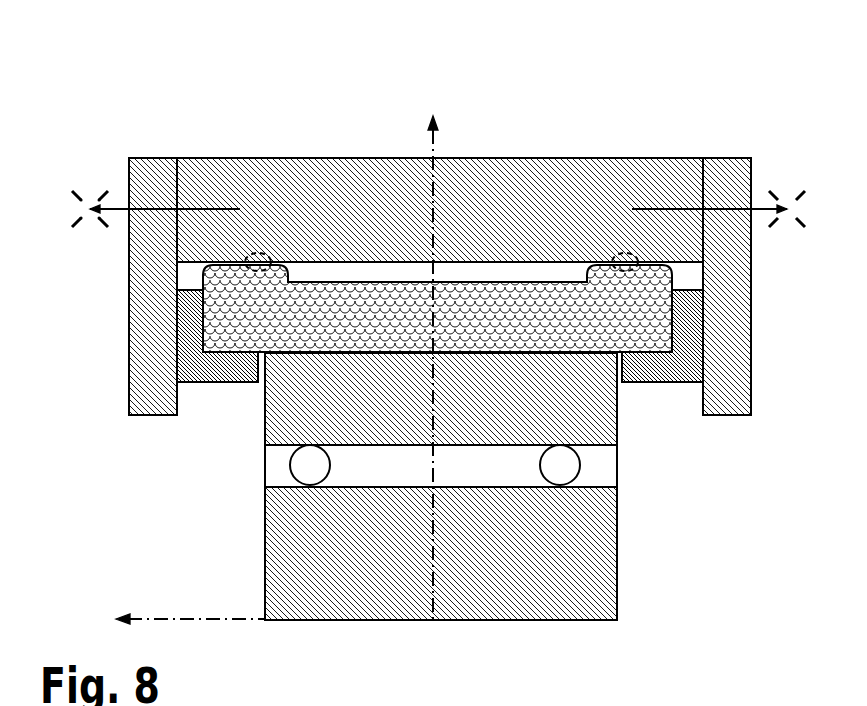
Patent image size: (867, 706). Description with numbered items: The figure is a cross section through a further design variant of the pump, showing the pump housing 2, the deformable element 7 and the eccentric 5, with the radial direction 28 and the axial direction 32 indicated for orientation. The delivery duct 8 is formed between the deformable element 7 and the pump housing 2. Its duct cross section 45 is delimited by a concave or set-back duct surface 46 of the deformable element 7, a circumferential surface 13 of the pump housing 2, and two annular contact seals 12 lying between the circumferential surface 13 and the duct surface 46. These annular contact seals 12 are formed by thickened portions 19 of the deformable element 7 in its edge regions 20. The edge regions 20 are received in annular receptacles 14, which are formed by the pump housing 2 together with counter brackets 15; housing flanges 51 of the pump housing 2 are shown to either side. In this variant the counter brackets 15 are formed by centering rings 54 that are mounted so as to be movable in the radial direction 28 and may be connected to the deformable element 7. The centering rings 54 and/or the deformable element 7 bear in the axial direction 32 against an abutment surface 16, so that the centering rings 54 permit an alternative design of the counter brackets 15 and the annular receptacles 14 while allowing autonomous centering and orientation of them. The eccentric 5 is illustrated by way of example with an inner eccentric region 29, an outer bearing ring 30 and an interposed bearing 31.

The pump housing 2 is at (537, 158).
The eccentric 5 is at (617, 525).
The deformable element 7 is at (347, 280).
The delivery duct 8 is at (478, 270).
The annular contact seal 12 is at (253, 250).
The circumferential surface 13 is at (360, 268).
The annular receptacle 14 is at (235, 340).
The counter bracket 15 is at (213, 383).
The abutment surface 16 is at (180, 383).
The thickened portion 19 is at (283, 263).
The edge region 20 is at (227, 310).
The radial direction 28 is at (425, 140).
The inner eccentric region 29 is at (617, 580).
The outer bearing ring 30 is at (617, 410).
The bearing 31 is at (581, 466).
The axial direction 32 is at (162, 613).
The duct cross section 45 is at (503, 272).
The duct surface 46 is at (452, 282).
The housing flange 51 is at (128, 302).
The centering ring 54 is at (177, 373).